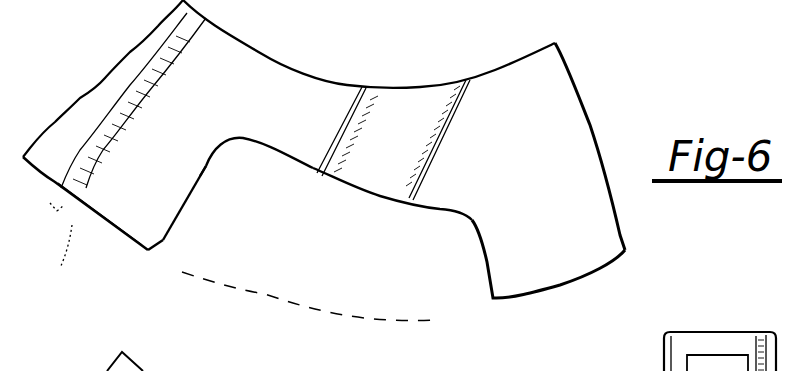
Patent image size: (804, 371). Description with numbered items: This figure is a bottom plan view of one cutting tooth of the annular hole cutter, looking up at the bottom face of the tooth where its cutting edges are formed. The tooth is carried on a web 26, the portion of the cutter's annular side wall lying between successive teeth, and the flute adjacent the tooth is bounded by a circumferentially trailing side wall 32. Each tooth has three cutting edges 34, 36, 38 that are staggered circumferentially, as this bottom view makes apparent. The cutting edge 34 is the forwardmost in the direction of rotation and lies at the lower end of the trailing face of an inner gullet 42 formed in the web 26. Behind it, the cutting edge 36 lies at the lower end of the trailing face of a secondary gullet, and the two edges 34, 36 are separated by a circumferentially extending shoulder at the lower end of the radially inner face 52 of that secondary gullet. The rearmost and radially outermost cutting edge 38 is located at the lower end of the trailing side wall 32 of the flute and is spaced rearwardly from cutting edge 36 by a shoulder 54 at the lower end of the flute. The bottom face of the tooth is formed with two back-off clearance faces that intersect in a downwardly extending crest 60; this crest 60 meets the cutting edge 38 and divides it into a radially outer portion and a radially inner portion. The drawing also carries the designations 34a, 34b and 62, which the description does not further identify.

The web 26 is at (487, 268).
The trailing side wall 32 is at (350, 120).
The cutting edge 34 is at (186, 216).
The lower corner of hinge edge 34a is at (158, 252).
The upper portion of hinge edge 34b is at (207, 170).
The cutting edge 36 is at (150, 163).
The cutting edge 38 is at (137, 231).
The inner gullet 42 is at (417, 103).
The radially inner face 52 is at (270, 295).
The shoulder 54 is at (348, 36).
The crest 60 is at (250, 139).
The lower edge 62 is at (308, 169).